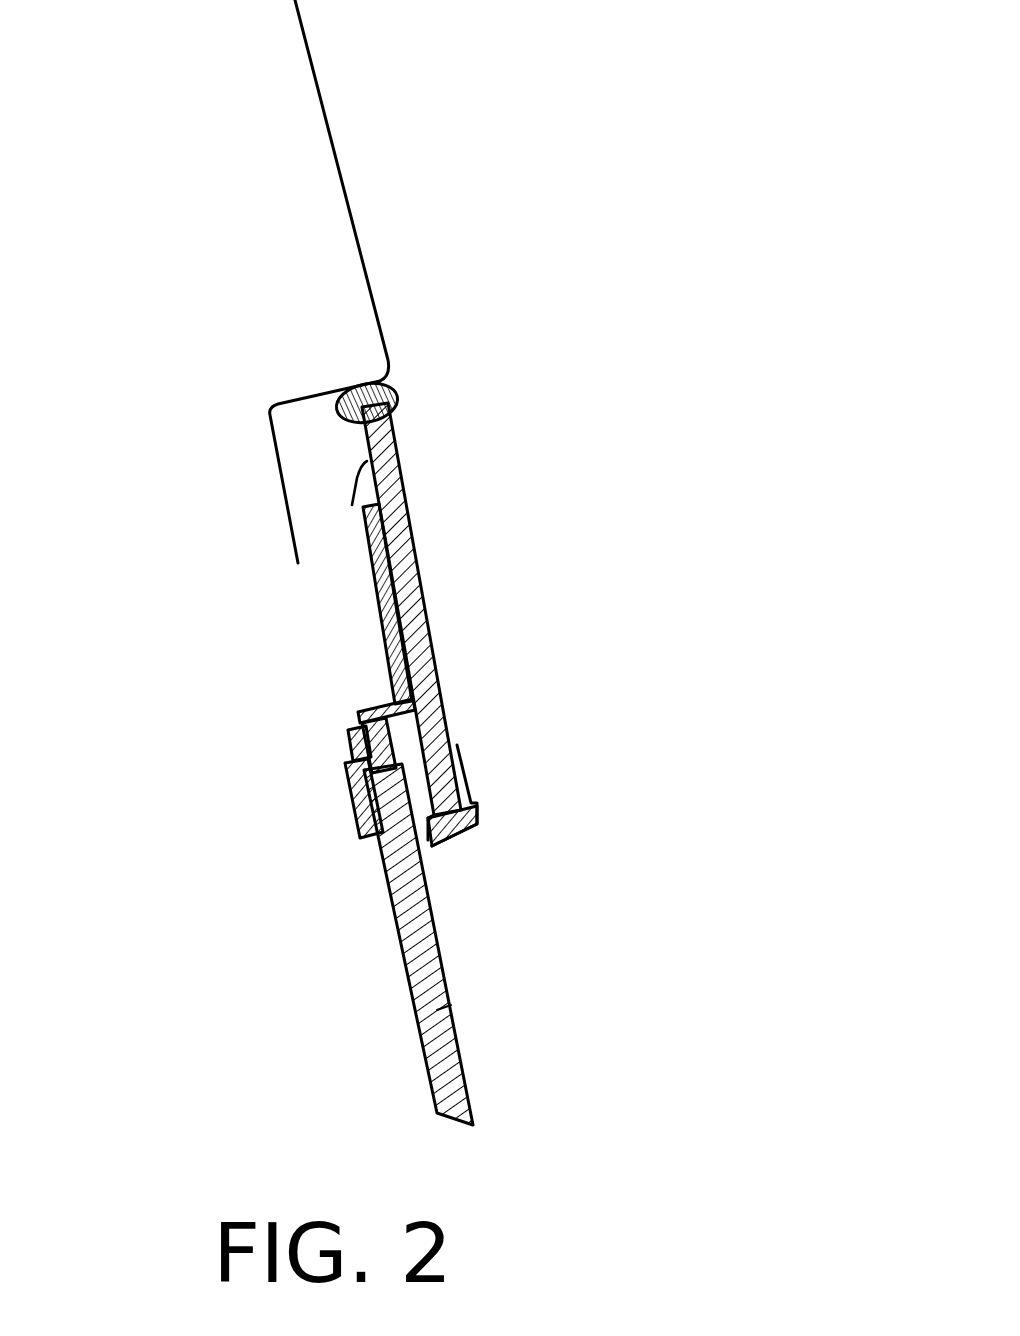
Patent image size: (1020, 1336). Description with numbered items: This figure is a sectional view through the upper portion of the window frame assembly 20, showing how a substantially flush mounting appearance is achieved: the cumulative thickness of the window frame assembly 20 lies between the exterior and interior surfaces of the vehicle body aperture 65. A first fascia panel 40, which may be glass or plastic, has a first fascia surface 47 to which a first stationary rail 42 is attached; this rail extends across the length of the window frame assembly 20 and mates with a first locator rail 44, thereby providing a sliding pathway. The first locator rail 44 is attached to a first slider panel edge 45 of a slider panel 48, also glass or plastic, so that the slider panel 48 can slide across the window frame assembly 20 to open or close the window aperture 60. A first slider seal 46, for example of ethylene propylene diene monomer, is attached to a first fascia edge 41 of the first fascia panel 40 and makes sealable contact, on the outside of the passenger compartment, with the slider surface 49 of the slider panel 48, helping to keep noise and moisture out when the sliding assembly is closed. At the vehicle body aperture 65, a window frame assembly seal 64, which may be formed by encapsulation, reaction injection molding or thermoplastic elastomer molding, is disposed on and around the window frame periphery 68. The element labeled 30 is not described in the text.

The window frame assembly 20 is at (575, 794).
The panel 30 is at (345, 172).
The first fascia panel 40 is at (418, 572).
The first fascia edge 41 is at (457, 745).
The first stationary rail 42 is at (388, 648).
The first locator rail 44 is at (352, 826).
The first slider panel edge 45 is at (350, 745).
The first slider seal 46 is at (450, 843).
The first fascia surface 47 is at (352, 505).
The slider panel 48 is at (423, 998).
The slider surface 49 is at (451, 1005).
The window aperture 60 is at (588, 1122).
The window frame assembly seal 64 is at (355, 384).
The vehicle body aperture 65 is at (503, 316).
The window frame periphery 68 is at (346, 414).